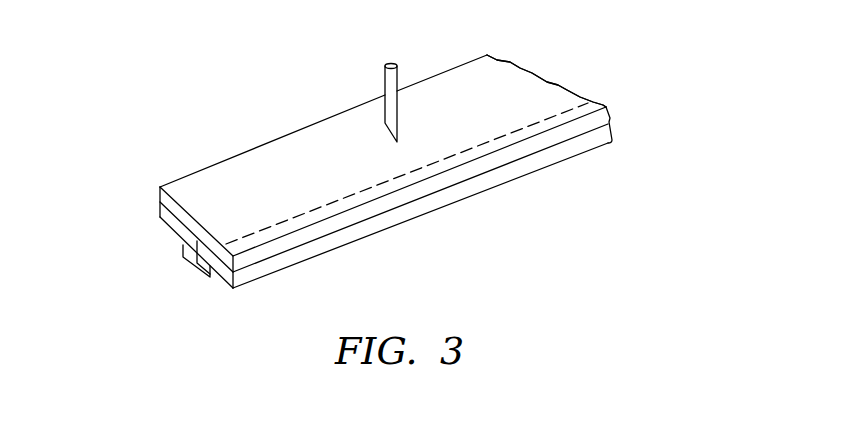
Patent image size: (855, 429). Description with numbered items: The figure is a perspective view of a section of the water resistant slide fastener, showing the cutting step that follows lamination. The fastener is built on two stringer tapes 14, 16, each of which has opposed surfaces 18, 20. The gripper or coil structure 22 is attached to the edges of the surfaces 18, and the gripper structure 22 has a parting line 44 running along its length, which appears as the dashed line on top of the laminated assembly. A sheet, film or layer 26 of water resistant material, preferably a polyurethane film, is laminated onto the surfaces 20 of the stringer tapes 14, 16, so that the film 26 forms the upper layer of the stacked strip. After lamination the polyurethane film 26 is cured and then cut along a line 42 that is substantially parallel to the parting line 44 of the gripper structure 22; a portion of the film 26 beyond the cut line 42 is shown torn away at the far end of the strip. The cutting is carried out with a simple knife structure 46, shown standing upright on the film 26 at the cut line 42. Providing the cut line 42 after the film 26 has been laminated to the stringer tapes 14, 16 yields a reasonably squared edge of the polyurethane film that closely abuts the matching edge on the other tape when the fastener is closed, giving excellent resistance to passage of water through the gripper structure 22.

The stringer tape 14 is at (159, 214).
The stringer tape 16 is at (229, 278).
The opposed surface 18 is at (168, 230).
The opposed surface 20 is at (158, 199).
The gripper or coil structure 22 is at (192, 265).
The sheet, film or layer of water resistant material 26 is at (284, 151).
The cut line 42 is at (483, 108).
The parting line 44 is at (362, 190).
The knife structure 46 is at (387, 84).